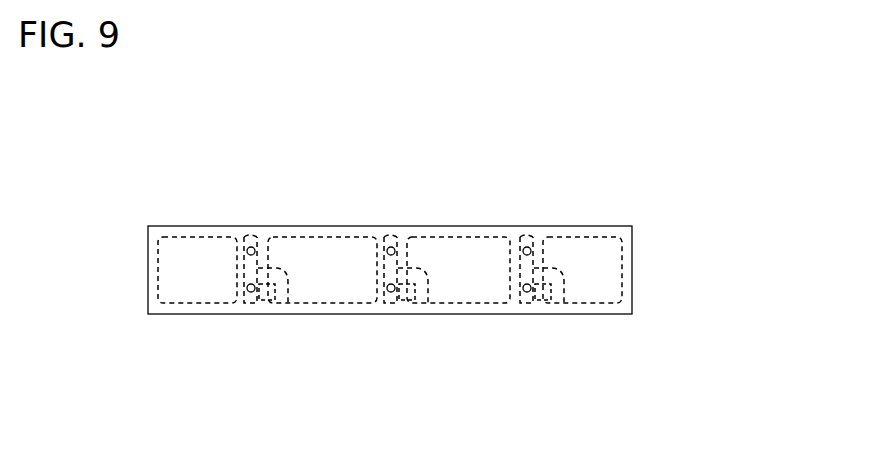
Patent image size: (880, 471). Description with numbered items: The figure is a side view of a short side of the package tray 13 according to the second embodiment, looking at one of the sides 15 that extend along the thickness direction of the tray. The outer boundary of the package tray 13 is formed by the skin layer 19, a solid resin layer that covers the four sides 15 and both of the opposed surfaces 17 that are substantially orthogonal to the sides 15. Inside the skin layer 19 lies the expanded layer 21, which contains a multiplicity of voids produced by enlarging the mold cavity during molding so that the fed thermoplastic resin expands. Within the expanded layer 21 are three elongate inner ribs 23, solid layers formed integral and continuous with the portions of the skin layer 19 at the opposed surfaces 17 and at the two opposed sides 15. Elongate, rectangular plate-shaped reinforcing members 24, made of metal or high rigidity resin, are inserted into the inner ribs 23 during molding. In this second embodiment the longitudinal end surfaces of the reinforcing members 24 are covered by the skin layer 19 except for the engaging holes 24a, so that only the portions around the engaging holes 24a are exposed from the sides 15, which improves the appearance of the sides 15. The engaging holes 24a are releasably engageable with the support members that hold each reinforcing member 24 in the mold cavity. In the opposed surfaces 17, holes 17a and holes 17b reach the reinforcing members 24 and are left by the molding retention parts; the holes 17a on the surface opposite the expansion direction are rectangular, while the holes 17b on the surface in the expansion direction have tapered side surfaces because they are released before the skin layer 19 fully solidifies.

The package tray 13 is at (405, 136).
The sides 15 is at (148, 255).
The surfaces 17 is at (476, 226).
The holes 17a is at (250, 303).
The holes 17b is at (246, 238).
The skin layer 19 is at (158, 288).
The expanded layer 21 is at (198, 250).
The inner ribs 23 is at (290, 300).
The reinforcing members 24 is at (253, 246).
The engaging holes 24a is at (249, 254).